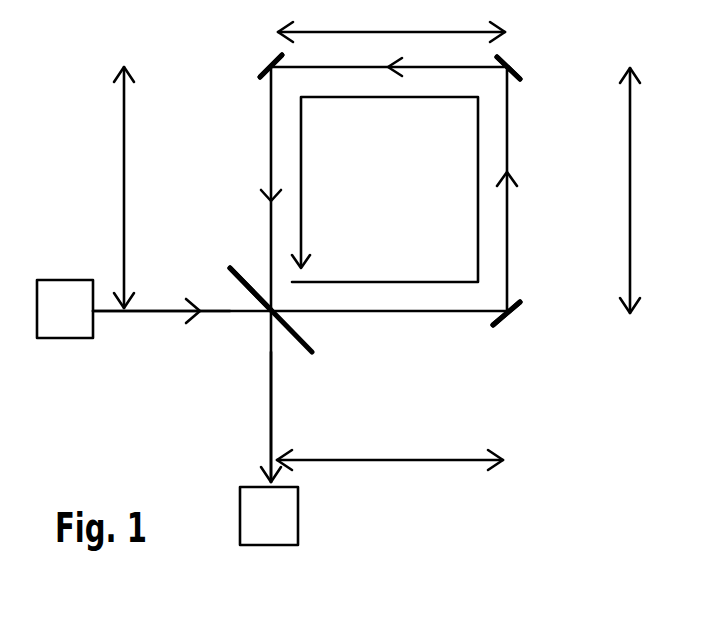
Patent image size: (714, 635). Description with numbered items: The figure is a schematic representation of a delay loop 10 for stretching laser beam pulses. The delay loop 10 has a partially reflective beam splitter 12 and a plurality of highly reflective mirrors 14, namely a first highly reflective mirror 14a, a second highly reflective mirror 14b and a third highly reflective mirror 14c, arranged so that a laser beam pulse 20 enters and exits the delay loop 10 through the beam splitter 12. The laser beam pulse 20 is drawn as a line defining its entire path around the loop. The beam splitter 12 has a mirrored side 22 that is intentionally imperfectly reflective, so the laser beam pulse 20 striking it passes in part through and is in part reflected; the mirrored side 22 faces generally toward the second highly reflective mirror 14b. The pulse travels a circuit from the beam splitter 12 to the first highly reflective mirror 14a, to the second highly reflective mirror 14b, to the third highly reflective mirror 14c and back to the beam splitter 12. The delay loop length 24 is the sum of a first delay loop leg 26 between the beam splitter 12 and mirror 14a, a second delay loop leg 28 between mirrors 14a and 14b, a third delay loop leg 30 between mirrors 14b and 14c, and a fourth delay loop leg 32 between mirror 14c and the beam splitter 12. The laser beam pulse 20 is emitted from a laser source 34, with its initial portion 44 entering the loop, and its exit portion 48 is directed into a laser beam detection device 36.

The delay loop 10 is at (544, 131).
The beam splitter 12 is at (312, 345).
The highly reflective mirrors 14 is at (259, 80).
The first highly reflective mirror 14a is at (516, 311).
The second highly reflective mirror 14b is at (501, 58).
The third highly reflective mirror 14c is at (275, 61).
The laser beam pulse 20 is at (508, 230).
The mirrored side 22 is at (232, 268).
The delay loop length 24 is at (398, 99).
The first delay loop leg 26 is at (390, 480).
The second delay loop leg 28 is at (629, 176).
The third delay loop leg 30 is at (370, 34).
The fourth delay loop leg 32 is at (122, 176).
The laser source 34 is at (51, 325).
The laser beam detection device 36 is at (255, 534).
The initial portion 44 is at (173, 295).
The exit portion 48 is at (256, 410).